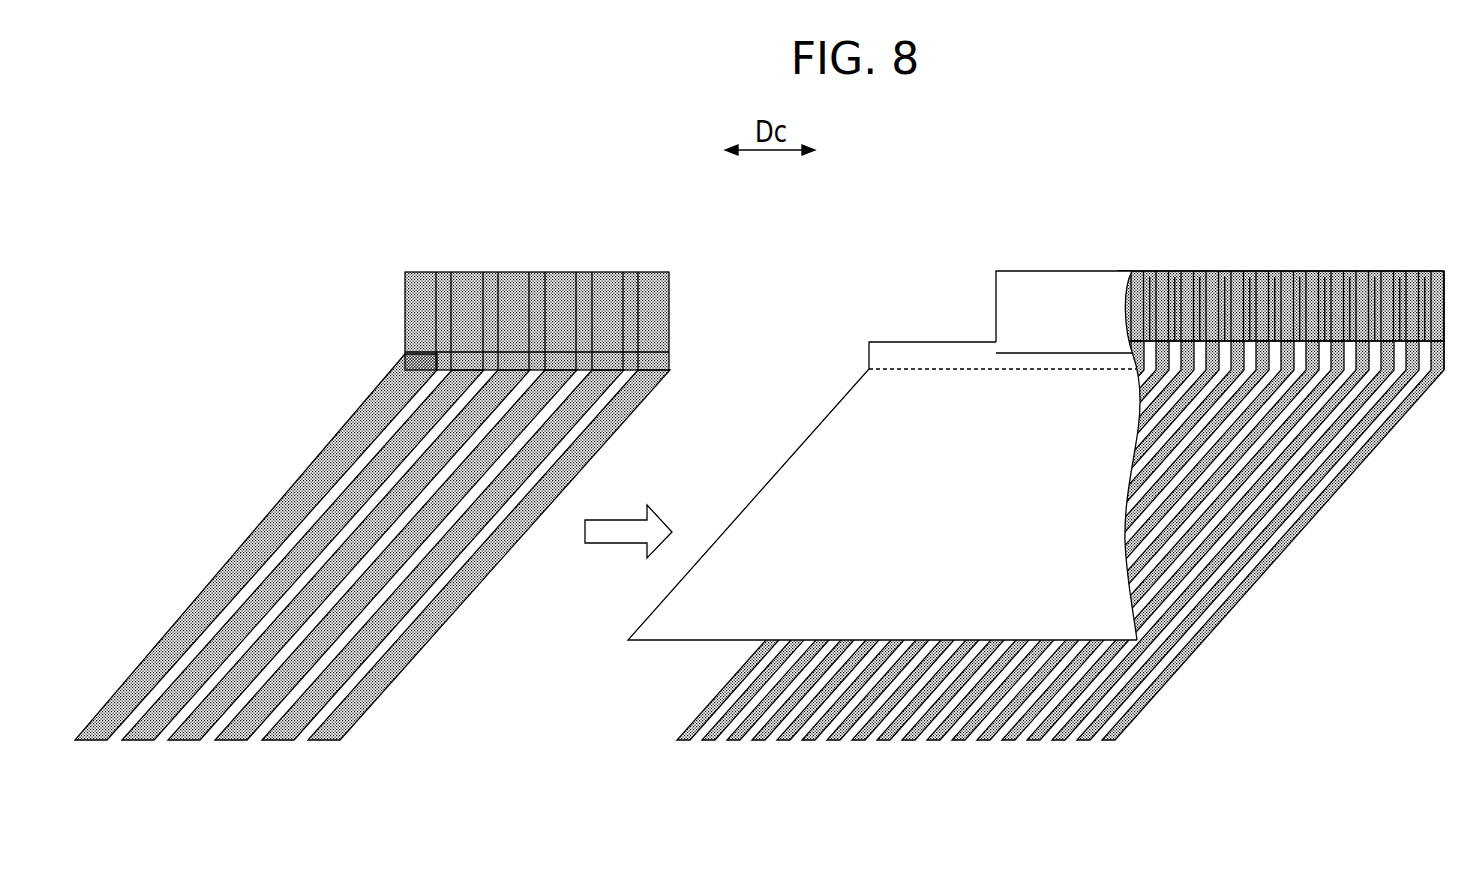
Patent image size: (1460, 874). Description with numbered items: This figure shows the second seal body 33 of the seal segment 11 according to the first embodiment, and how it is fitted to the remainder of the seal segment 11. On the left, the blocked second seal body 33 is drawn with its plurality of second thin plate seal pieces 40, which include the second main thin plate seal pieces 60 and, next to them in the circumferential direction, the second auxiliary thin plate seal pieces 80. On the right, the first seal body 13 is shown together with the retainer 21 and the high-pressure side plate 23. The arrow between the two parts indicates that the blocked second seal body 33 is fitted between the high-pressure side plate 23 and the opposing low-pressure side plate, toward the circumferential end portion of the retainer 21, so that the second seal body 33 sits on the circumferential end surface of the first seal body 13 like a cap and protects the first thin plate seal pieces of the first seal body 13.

The seal segment 11 is at (986, 201).
The first seal body 13 is at (1206, 250).
The retainer 21 is at (1070, 270).
The high-pressure side plate 23 is at (925, 405).
The second seal body 33 is at (563, 248).
The second thin plate seal pieces 40 is at (372, 608).
The second main thin plate seal pieces 60 is at (487, 587).
The second auxiliary thin plate seal pieces 80 is at (95, 728).